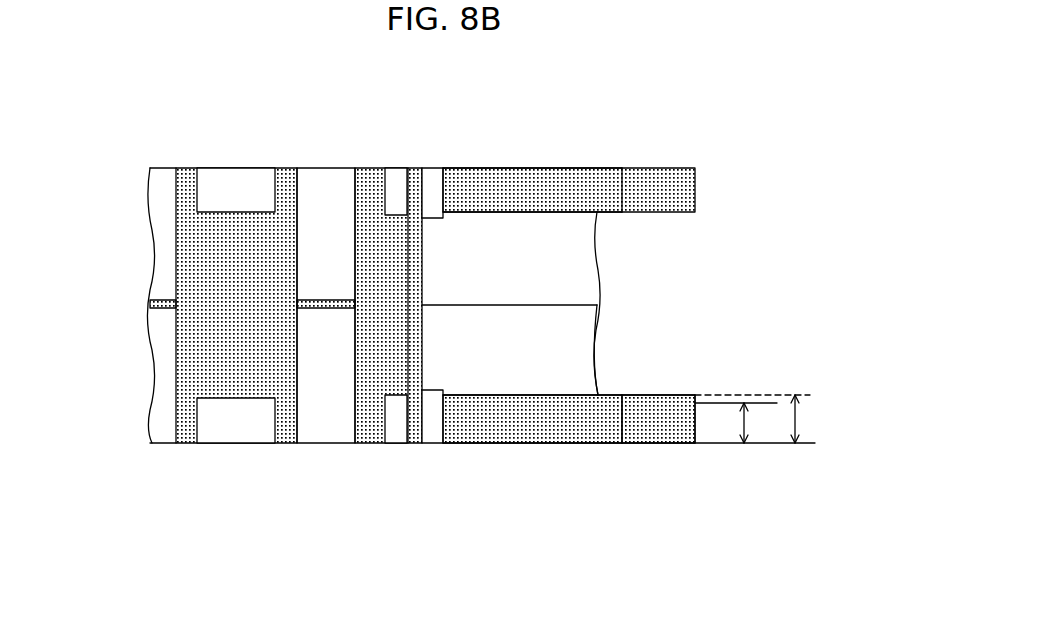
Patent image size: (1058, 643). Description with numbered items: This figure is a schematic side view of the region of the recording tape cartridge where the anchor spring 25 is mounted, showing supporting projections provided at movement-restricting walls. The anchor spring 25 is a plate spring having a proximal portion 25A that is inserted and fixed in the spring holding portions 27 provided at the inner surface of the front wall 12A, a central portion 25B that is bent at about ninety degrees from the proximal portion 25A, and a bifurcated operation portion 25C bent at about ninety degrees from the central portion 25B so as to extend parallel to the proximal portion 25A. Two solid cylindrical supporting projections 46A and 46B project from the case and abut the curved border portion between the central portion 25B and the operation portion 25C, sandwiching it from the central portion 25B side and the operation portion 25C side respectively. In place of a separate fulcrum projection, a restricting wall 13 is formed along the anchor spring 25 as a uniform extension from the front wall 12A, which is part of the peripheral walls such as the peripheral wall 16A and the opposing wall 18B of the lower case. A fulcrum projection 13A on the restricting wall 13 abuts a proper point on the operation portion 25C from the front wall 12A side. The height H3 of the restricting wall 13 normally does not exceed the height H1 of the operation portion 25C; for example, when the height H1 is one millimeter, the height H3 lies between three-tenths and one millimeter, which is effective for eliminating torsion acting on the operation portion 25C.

The spring holding portions 27 is at (157, 175).
The proximal portion 25A is at (200, 358).
The central portion 25B is at (418, 312).
The supporting projection 46A is at (396, 205).
The supporting projection 46B is at (426, 205).
The restricting wall 13 is at (483, 167).
The fulcrum projection 13A is at (535, 200).
The operation portion 25C is at (598, 205).
The anchor spring 25 is at (673, 428).
The peripheral wall 16A is at (592, 277).
The lower layer 18B is at (578, 345).
The front wall 12A is at (742, 250).
The height of the operation portion H1 is at (797, 417).
The height of the restricting wall H3 is at (747, 420).